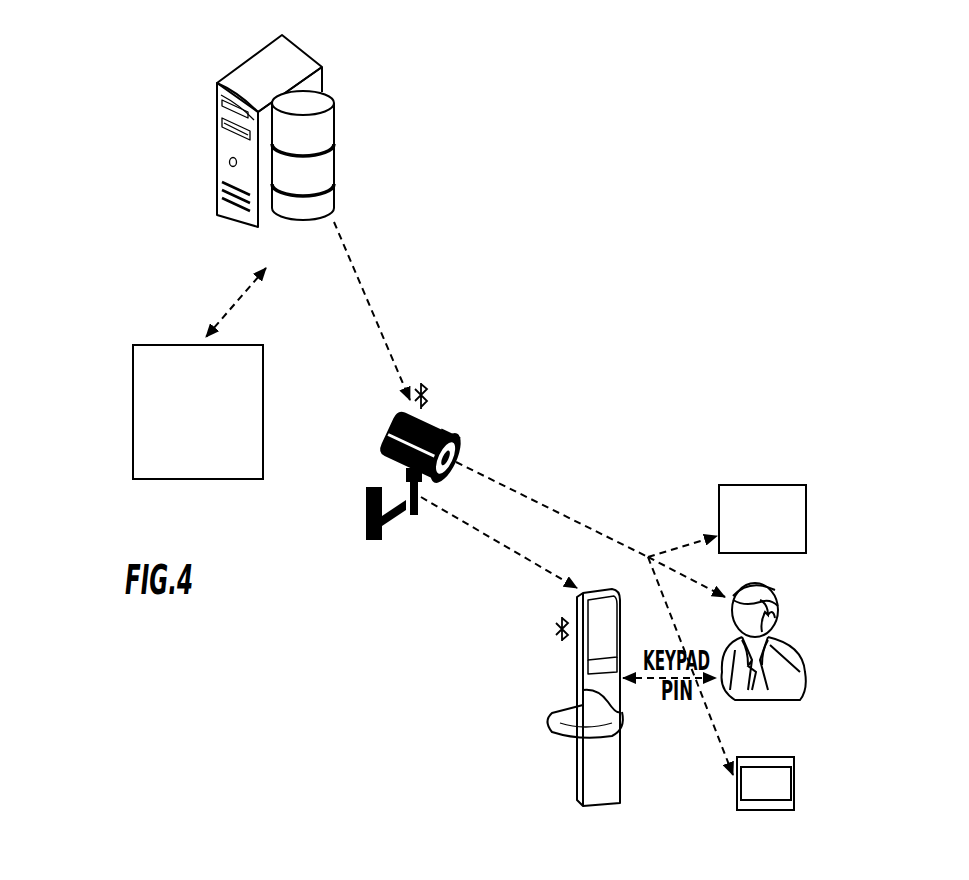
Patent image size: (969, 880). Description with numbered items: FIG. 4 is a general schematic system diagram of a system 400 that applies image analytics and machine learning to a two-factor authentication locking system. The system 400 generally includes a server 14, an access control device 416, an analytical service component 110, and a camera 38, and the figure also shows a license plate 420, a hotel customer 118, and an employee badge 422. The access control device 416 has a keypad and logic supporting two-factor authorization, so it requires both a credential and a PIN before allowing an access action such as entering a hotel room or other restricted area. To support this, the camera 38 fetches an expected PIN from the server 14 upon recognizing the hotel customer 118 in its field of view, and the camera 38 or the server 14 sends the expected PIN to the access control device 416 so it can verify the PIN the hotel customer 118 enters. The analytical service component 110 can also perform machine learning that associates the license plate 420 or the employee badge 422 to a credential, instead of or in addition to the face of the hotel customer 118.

The system 400 is at (108, 238).
The server 14 is at (294, 58).
The analytical service component 110 is at (263, 402).
The camera 38 is at (436, 416).
The license plate 420 is at (740, 487).
The hotel customer 118 is at (785, 656).
The employee badge 422 is at (787, 788).
The access control device 416 is at (607, 782).